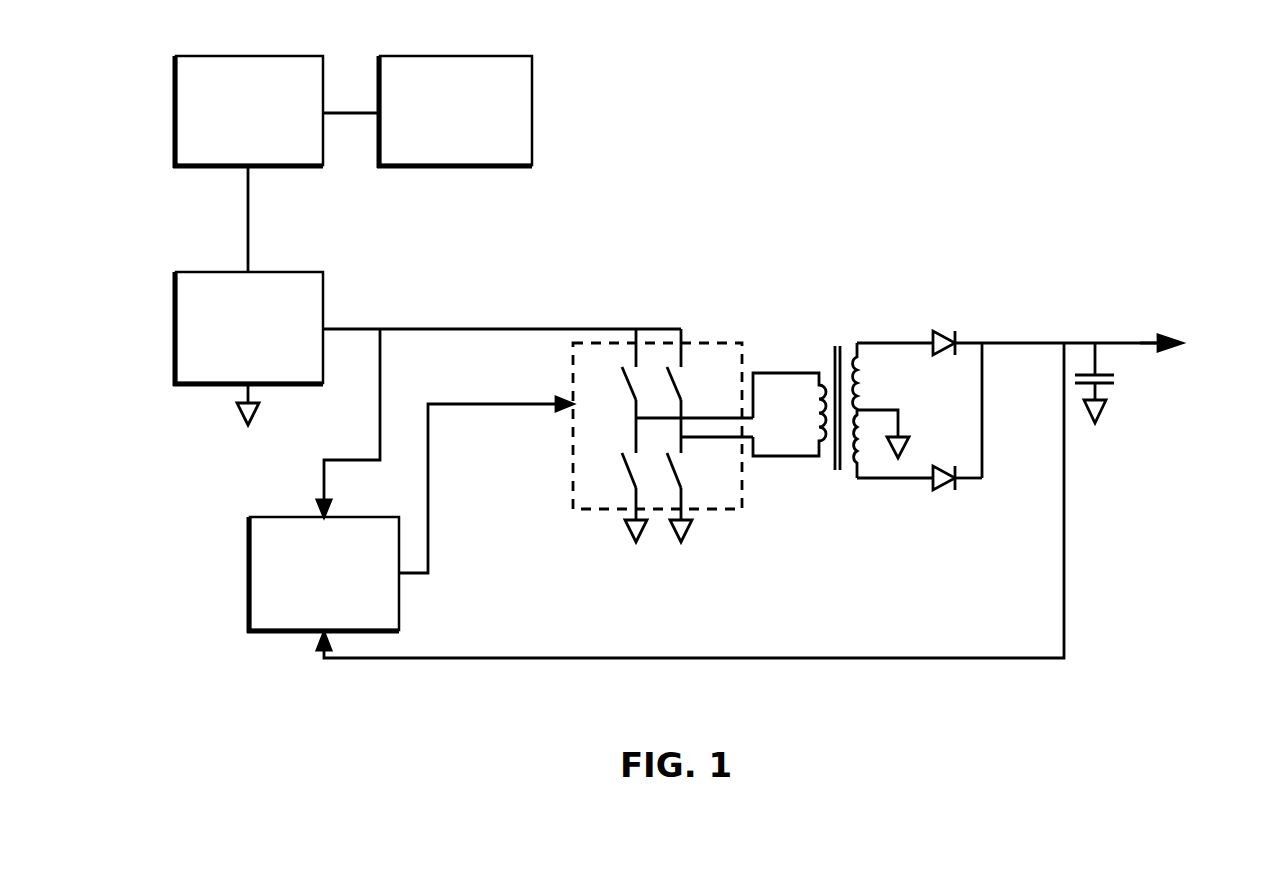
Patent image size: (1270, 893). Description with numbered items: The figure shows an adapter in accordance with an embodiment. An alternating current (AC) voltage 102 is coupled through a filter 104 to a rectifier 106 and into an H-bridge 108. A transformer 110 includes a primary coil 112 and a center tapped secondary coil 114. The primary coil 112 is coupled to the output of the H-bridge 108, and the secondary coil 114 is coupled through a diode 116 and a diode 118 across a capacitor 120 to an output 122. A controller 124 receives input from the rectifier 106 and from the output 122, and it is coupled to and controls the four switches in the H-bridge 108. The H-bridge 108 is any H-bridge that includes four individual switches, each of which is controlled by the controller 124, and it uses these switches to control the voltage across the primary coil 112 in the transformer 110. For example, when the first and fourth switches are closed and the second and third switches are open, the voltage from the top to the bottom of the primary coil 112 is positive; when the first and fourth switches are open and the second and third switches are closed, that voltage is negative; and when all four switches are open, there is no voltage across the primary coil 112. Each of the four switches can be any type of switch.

The alternating current (AC) voltage 102 is at (454, 112).
The filter 104 is at (276, 164).
The rectifier 106 is at (427, 394).
The H-bridge 108 is at (595, 522).
The transformer 110 is at (828, 480).
The primary coil 112 is at (808, 390).
The center tapped secondary coil 114 is at (870, 372).
The diode 116 is at (945, 492).
The diode 118 is at (945, 327).
The capacitor 120 is at (1081, 363).
The output 122 is at (1180, 357).
The controller 124 is at (655, 500).